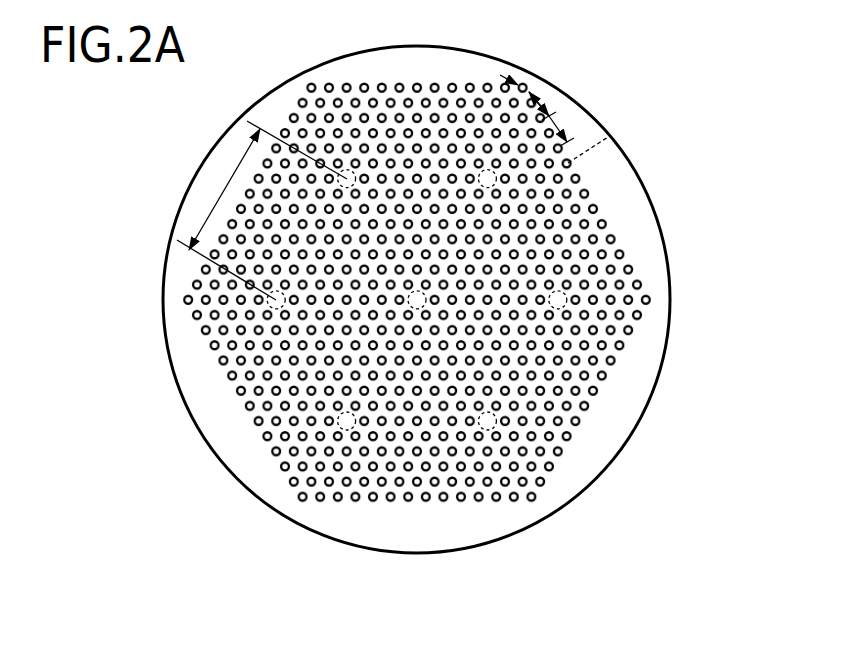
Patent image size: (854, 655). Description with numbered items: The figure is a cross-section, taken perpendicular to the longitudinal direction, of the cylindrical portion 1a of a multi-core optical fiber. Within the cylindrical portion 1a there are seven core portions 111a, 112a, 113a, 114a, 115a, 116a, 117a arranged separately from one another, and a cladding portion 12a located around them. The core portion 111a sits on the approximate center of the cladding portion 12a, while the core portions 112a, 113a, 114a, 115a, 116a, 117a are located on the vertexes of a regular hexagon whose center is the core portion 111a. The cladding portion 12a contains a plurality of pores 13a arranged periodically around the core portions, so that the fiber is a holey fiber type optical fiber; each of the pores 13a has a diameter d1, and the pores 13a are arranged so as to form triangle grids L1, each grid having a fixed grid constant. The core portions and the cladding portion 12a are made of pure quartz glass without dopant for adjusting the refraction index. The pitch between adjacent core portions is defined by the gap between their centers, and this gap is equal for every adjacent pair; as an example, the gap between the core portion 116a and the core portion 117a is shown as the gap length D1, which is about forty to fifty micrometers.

The cylindrical portion 1a is at (628, 61).
The cladding portion 12a is at (647, 403).
The pores 13a is at (651, 300).
The core portion 111a is at (418, 290).
The core portion 112a is at (488, 169).
The core portion 113a is at (558, 309).
The core portion 114a is at (488, 430).
The core portion 115a is at (347, 430).
The core portion 116a is at (272, 308).
The core portion 117a is at (347, 169).
The pore diameter d1 is at (528, 83).
The triangle grid L1 is at (608, 137).
The gap length D1 is at (222, 190).